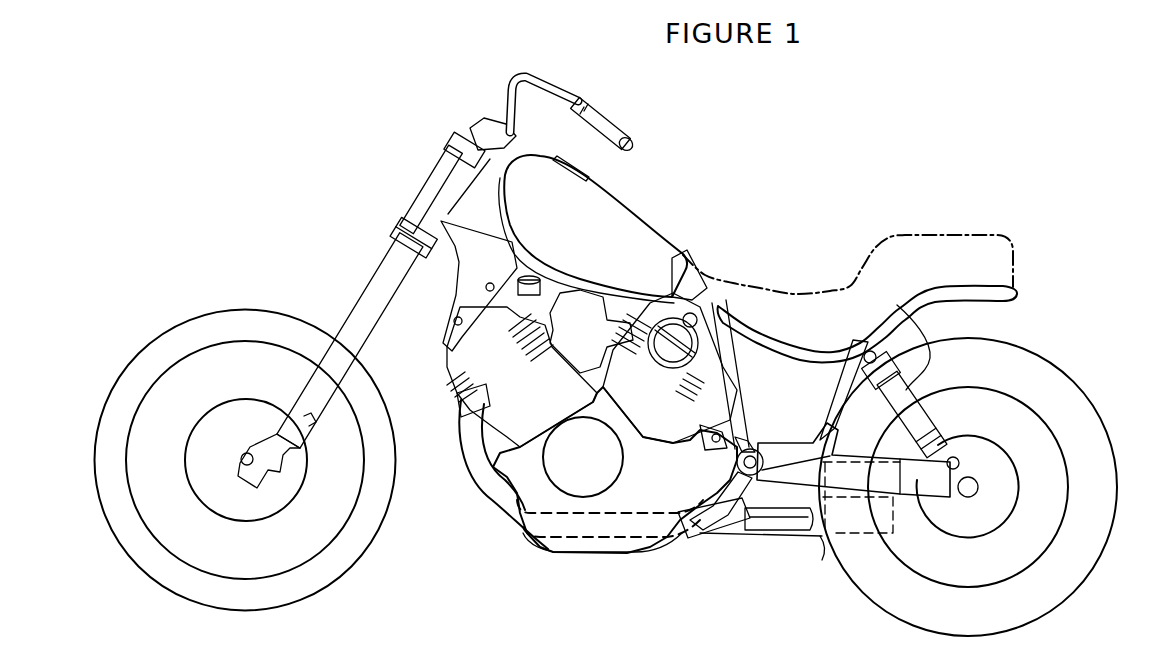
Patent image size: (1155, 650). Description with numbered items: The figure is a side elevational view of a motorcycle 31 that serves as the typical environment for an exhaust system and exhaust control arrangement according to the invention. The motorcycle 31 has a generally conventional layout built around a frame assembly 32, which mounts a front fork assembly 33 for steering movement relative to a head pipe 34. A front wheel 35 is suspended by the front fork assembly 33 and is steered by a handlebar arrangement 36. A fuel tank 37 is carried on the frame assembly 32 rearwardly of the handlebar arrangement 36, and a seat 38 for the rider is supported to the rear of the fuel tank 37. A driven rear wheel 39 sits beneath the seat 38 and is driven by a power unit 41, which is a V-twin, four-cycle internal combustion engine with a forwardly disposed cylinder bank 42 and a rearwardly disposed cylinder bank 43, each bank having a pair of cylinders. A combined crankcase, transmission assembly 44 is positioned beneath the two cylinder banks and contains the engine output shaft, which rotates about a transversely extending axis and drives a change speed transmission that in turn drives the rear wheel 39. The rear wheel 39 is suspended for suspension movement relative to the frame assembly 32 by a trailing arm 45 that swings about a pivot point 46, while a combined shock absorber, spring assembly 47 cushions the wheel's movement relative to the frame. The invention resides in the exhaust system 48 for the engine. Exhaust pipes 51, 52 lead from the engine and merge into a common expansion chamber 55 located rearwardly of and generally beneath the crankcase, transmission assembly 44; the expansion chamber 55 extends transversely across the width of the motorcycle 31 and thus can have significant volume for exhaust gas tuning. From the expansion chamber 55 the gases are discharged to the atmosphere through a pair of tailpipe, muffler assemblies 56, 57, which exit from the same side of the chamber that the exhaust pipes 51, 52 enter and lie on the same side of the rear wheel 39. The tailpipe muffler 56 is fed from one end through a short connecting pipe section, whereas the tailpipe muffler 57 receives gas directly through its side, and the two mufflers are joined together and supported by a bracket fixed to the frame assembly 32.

The motorcycle 31 is at (736, 193).
The frame assembly 32 is at (771, 330).
The front fork assembly 33 is at (390, 276).
The head pipe 34 is at (436, 195).
The front wheel 35 is at (262, 308).
The handlebar arrangement 36 is at (631, 133).
The fuel tank 37 is at (631, 209).
The seat 38 is at (842, 240).
The rear wheel 39 is at (1091, 400).
The power unit 41 is at (538, 555).
The forwardly disposed cylinder bank 42 is at (445, 368).
The rearwardly disposed cylinder bank 43 is at (686, 251).
The combined crankcase, transmission assembly 44 is at (600, 552).
The trailing arm 45 is at (862, 510).
The pivot point 46 is at (758, 443).
The combined shock absorber, spring assembly 47 is at (902, 362).
The exhaust system 48 is at (486, 522).
The exhaust pipe 51 is at (462, 468).
The exhaust pipe 52 is at (708, 541).
The expansion chamber 55 is at (788, 538).
The tailpipe, muffler assembly 56 is at (852, 459).
The tailpipe, muffler assembly 57 is at (819, 545).